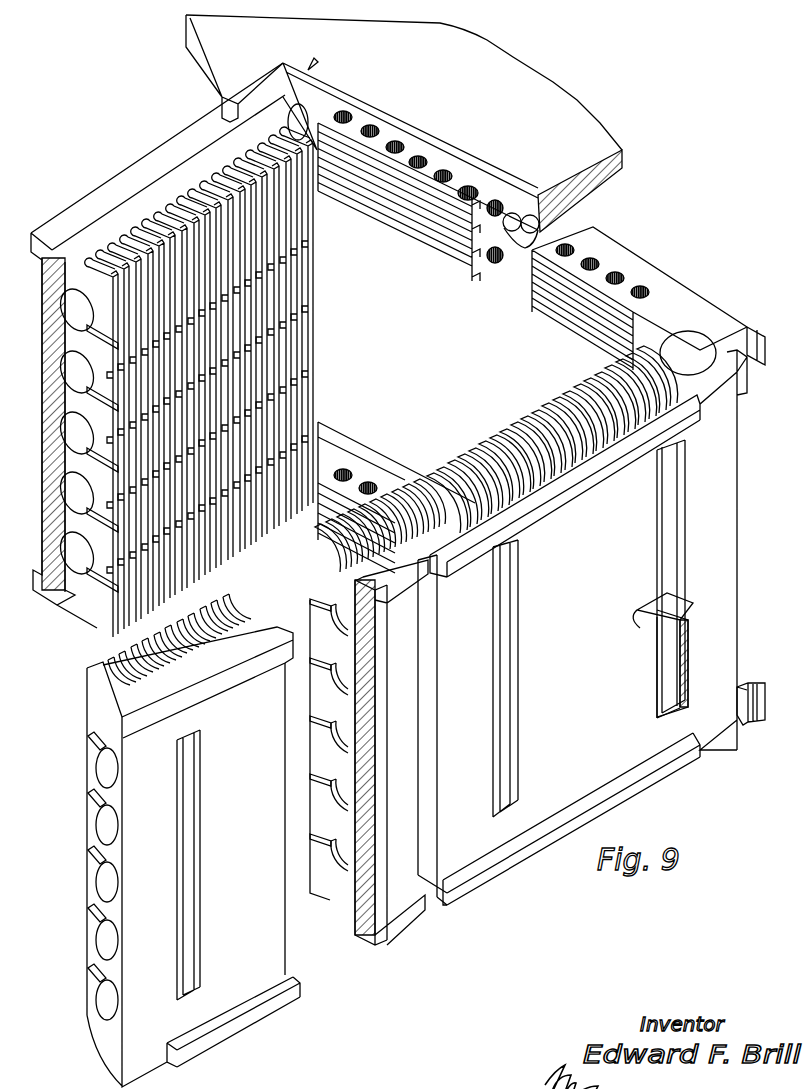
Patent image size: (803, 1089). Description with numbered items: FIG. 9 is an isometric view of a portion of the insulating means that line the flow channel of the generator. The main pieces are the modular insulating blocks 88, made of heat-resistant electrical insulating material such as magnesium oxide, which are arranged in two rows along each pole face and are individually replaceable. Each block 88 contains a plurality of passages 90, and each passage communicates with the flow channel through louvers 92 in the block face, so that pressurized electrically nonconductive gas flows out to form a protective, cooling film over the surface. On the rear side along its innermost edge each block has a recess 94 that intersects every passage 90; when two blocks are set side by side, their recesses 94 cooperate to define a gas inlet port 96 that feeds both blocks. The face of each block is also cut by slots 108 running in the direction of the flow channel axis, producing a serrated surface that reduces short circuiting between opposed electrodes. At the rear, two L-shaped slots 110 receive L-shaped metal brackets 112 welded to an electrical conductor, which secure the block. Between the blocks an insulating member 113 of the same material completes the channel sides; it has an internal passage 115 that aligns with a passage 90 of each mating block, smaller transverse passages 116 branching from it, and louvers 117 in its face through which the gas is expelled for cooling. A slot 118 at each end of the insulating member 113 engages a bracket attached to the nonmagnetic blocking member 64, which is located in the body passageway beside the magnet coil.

The blocking member 64 is at (624, 163).
The insulating block 88 is at (126, 182).
The passage 90 is at (100, 538).
The louver 92 is at (108, 506).
The recess 94 is at (382, 645).
The gas inlet port 96 is at (430, 664).
The slot 108 is at (300, 396).
The L-shaped slot 110 is at (508, 762).
The L-shaped metal bracket 112 is at (688, 668).
The insulating member 113 is at (420, 125).
The internal passage 115 is at (520, 242).
The transverse passage 116 is at (470, 190).
The louver 117 is at (465, 205).
The slot 118 is at (318, 64).